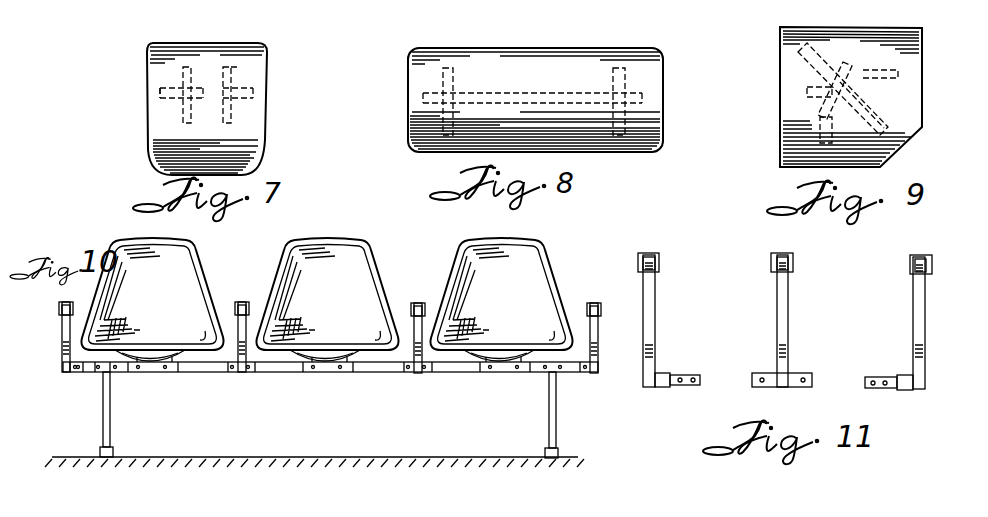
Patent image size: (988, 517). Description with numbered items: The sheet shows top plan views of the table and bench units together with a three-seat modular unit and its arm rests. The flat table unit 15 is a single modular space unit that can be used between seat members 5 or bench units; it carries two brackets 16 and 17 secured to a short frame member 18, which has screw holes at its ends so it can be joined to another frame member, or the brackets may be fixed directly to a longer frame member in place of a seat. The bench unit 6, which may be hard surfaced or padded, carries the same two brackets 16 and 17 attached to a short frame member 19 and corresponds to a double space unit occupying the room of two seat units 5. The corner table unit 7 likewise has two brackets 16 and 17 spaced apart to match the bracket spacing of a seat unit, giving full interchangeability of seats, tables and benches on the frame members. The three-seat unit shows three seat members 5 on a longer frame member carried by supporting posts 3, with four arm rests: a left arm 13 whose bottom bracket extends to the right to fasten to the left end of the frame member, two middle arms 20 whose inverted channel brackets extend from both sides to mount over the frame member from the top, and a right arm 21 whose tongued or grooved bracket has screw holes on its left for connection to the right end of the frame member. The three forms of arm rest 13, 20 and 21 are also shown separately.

In FIG. 9, the supporting post 3 is at (883, 120).
In FIG. 10, the supporting post 3 is at (107, 427).
In FIG. 10, the seat member 5 is at (182, 257).
In FIG. 8, the bench unit 6 is at (470, 62).
In FIG. 9, the corner table unit 7 is at (905, 48).
In FIG. 10, the left arm rest 13 is at (66, 345).
In FIG. 11, the left arm rest 13 is at (650, 310).
In FIG. 7, the table unit 15 is at (158, 63).
In FIG. 7, the bracket 16 is at (187, 57).
In FIG. 8, the bracket 16 is at (440, 68).
In FIG. 9, the bracket 16 is at (807, 90).
In FIG. 7, the bracket 17 is at (262, 60).
In FIG. 8, the bracket 17 is at (626, 56).
In FIG. 9, the bracket 17 is at (847, 56).
In FIG. 7, the short frame member 18 is at (162, 102).
In FIG. 8, the short frame member 19 is at (540, 93).
In FIG. 10, the middle arm rest 20 is at (238, 325).
In FIG. 11, the middle arm rest 20 is at (783, 312).
In FIG. 10, the right arm rest 21 is at (591, 306).
In FIG. 11, the right arm rest 21 is at (923, 320).